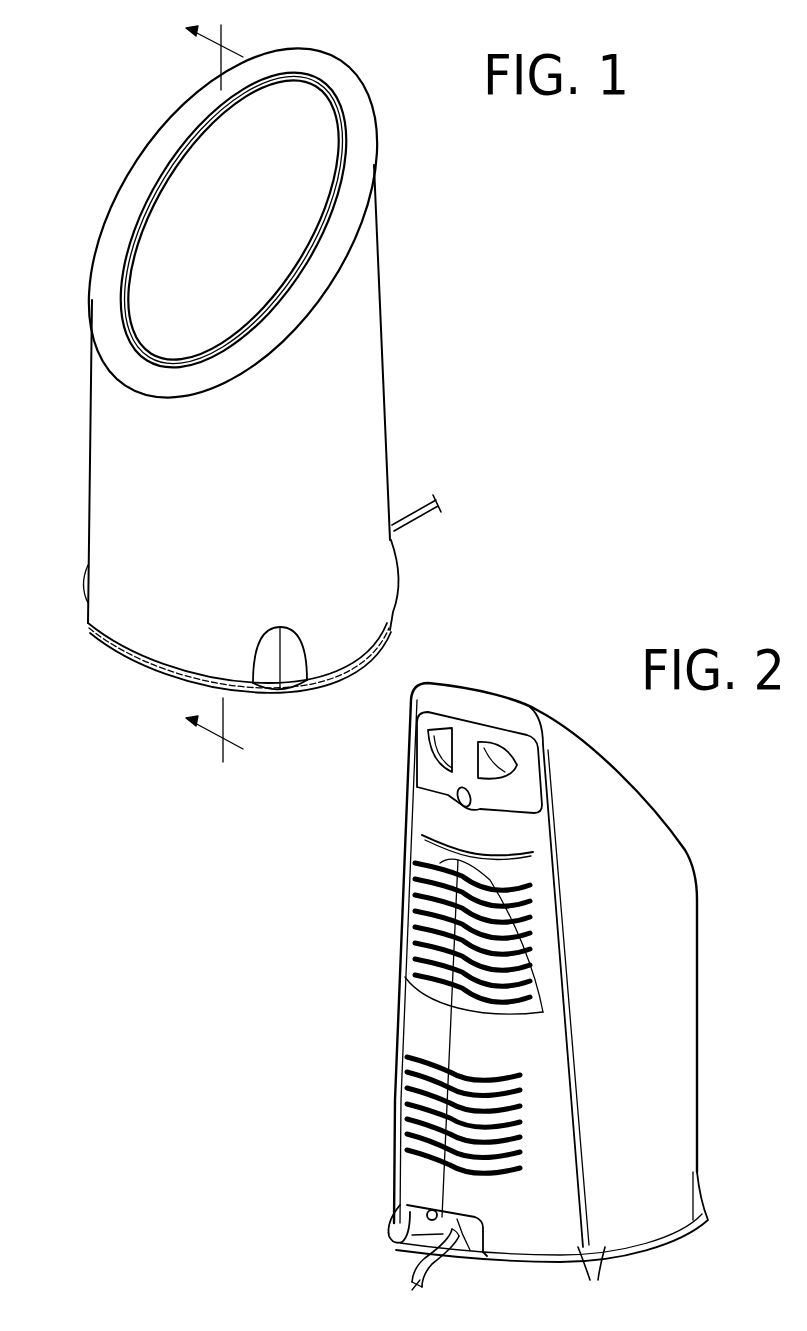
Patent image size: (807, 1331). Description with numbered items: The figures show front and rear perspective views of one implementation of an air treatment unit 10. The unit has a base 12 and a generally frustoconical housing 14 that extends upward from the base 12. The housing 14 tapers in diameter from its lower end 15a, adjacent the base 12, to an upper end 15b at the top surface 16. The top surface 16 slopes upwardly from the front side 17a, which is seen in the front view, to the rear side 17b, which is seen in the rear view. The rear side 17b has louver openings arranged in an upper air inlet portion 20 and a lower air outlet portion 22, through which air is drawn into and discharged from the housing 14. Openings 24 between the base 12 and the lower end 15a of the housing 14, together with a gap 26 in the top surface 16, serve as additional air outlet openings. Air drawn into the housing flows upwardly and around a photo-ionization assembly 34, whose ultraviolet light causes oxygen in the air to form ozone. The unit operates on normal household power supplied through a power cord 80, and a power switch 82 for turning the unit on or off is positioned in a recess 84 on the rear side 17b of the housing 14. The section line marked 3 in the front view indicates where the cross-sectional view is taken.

In FIG. 1, the air treatment unit 10 is at (440, 288).
In FIG. 2, the air treatment unit 10 is at (650, 760).
In FIG. 1, the base 12 is at (393, 632).
In FIG. 2, the base 12 is at (737, 1205).
In FIG. 1, the housing 14 is at (387, 455).
In FIG. 2, the housing 14 is at (697, 917).
In FIG. 1, the lower end 15a is at (117, 650).
In FIG. 2, the lower end 15a is at (600, 1247).
In FIG. 1, the upper end 15b is at (347, 62).
In FIG. 2, the upper end 15b is at (458, 680).
In FIG. 1, the top surface 16 is at (362, 118).
In FIG. 1, the front side 17a is at (117, 475).
In FIG. 2, the rear side 17b is at (425, 1028).
In FIG. 2, the upper air inlet portion 20 is at (400, 835).
In FIG. 2, the lower air outlet portion 22 is at (393, 1050).
In FIG. 1, the openings 24 is at (323, 670).
In FIG. 2, the openings 24 is at (596, 1278).
In FIG. 1, the gap 26 is at (343, 185).
In FIG. 2, the photo-ionization assembly 34 is at (423, 776).
In FIG. 1, the power cord 80 is at (428, 493).
In FIG. 2, the power cord 80 is at (407, 1270).
In FIG. 2, the power switch 82 is at (457, 1215).
In FIG. 2, the recess 84 is at (405, 1251).
In FIG. 1, the section line 3- 3 is at (217, 403).